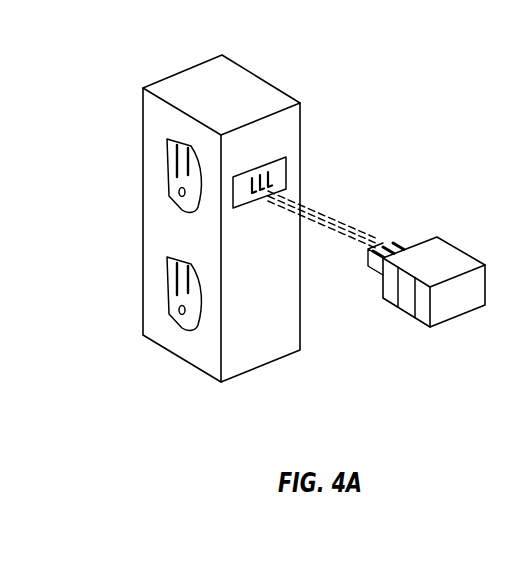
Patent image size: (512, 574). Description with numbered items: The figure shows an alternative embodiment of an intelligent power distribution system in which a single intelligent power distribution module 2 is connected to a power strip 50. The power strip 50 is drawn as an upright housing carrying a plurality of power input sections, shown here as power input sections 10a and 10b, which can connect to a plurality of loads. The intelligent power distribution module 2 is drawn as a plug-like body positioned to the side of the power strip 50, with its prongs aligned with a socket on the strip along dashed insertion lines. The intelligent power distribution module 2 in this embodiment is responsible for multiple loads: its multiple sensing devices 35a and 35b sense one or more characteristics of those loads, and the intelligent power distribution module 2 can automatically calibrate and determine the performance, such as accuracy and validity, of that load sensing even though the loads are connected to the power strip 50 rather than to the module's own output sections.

The power strip 50 is at (193, 75).
The power input section 10a is at (163, 163).
The power input section 10b is at (163, 282).
The intelligent power distribution module 2 is at (455, 257).
The sensing device 35a is at (390, 295).
The sensing device 35b is at (407, 307).